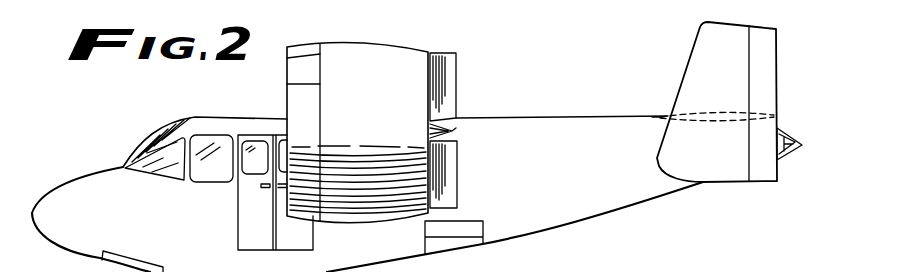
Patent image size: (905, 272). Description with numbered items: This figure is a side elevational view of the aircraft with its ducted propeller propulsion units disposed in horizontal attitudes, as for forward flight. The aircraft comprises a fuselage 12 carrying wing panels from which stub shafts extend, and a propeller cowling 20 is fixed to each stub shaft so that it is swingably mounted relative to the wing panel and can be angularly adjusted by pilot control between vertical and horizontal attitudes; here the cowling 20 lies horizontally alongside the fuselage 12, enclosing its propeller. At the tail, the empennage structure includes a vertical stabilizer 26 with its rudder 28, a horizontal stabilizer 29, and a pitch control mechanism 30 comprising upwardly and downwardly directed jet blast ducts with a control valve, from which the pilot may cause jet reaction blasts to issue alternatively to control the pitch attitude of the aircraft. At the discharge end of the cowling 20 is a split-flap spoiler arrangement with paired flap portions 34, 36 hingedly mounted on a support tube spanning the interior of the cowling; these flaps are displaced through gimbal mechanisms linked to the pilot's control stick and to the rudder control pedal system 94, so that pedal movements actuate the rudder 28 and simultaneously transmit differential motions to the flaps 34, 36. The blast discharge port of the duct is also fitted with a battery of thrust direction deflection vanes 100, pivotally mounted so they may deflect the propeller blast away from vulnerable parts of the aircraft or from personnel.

The fuselage 12 is at (573, 229).
The propeller cowling 20 is at (377, 80).
The vertical stabilizer 26 is at (688, 53).
The rudder 28 is at (772, 28).
The horizontal stabilizer 29 is at (666, 114).
The pitch control mechanism 30 is at (803, 145).
The flap portion 34 is at (457, 119).
The flap portion 36 is at (458, 142).
The rudder control pedal system 94 is at (446, 246).
The thrust direction deflection vanes 100 is at (457, 64).